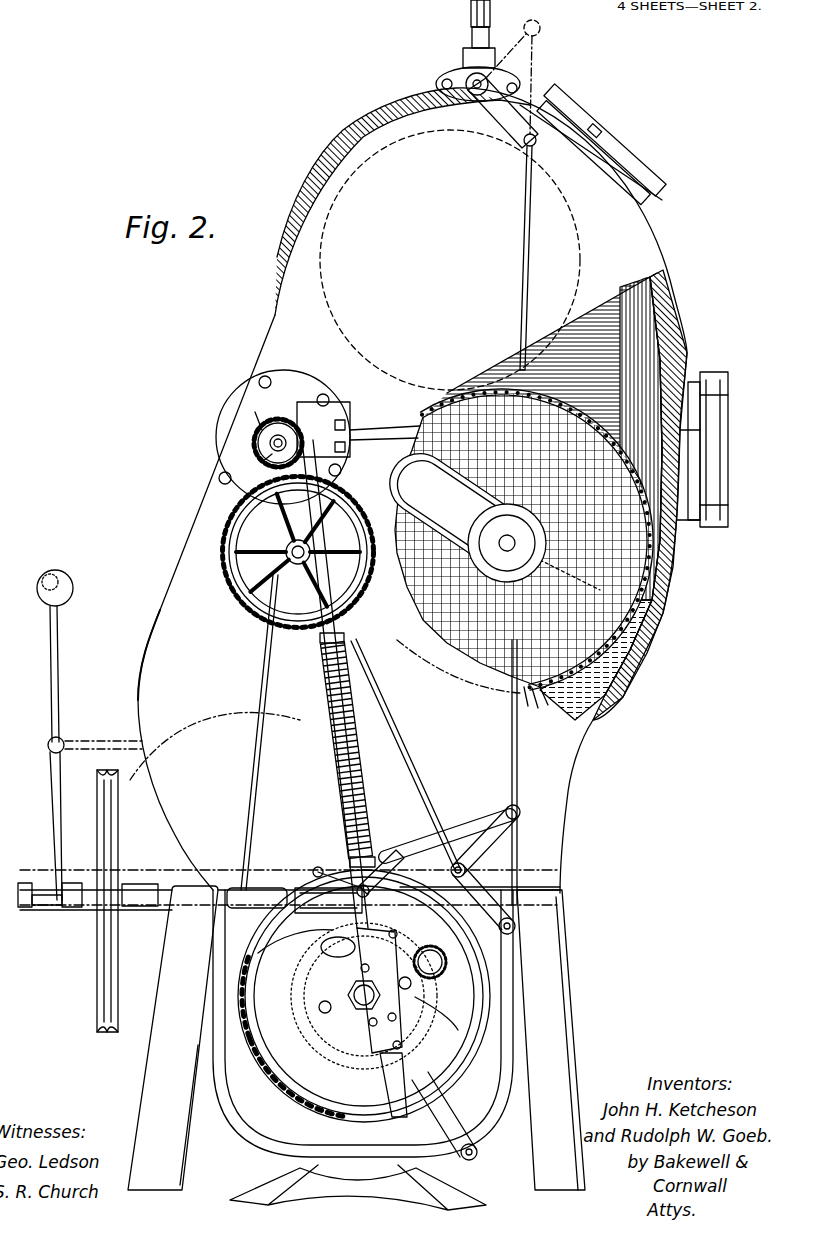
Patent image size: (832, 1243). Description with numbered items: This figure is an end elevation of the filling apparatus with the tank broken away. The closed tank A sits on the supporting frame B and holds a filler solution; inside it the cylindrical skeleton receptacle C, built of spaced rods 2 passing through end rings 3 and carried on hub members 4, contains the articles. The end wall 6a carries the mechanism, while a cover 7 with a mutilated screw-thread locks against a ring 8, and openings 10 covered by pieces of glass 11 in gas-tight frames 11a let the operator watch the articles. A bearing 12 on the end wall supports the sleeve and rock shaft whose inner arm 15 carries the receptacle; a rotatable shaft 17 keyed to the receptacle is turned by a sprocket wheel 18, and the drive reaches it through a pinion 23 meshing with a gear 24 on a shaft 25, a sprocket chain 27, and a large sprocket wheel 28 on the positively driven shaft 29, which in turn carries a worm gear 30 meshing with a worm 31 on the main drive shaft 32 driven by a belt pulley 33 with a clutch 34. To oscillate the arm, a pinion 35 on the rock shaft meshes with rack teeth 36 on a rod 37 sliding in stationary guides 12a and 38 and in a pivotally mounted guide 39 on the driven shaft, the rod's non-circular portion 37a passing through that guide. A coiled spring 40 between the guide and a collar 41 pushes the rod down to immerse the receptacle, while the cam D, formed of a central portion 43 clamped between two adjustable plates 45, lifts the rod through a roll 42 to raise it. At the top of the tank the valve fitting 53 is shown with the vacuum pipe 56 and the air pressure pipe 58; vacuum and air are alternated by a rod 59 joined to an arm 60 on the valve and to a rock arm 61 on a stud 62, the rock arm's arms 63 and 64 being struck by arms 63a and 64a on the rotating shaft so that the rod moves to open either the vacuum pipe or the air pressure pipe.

The closed tank A is at (408, 490).
The supporting frame B is at (575, 1016).
The receptacle C is at (632, 642).
The cam D is at (236, 1011).
The rods 2 is at (538, 708).
The rings 3 is at (452, 396).
The hub member 4 is at (570, 568).
The end wall 6a is at (188, 598).
The cover 7 is at (540, 362).
The ring 8 is at (640, 330).
The openings 10 is at (684, 546).
The pieces of glass 11 is at (716, 452).
The frames 11a is at (610, 150).
The bearing 12 is at (256, 412).
The stationary guide 12a is at (350, 440).
The arm 15 is at (453, 506).
The rotatable shaft 17 is at (498, 541).
The sprocket wheel 18 is at (494, 500).
The pinion 23 is at (254, 441).
The gear 24 is at (253, 616).
The shaft 25 is at (290, 557).
The sprocket chain 27 is at (258, 726).
The large sprocket wheel 28 is at (490, 960).
The positively driven shaft 29 is at (342, 988).
The worm gear 30 is at (439, 962).
The worm 31 is at (358, 980).
The main drive shaft 32 is at (234, 906).
The pulley 33 is at (98, 988).
The clutch 34 is at (60, 915).
The pinion 35 is at (262, 463).
The rack teeth 36 is at (300, 406).
The rod 37 is at (320, 512).
The non-circular portion 37a is at (380, 1101).
The stationary guide 38 is at (320, 642).
The pivotally mounted guide 39 is at (376, 1022).
The coiled spring 40 is at (334, 766).
The collar 41 is at (368, 872).
The roll 42 is at (372, 882).
The central portion 43 is at (330, 905).
The plates 45 is at (364, 996).
The bracket 53 is at (466, 58).
The vacuum pipe 56 is at (472, 38).
The air pressure pipe 58 is at (478, 10).
The rod 59 is at (522, 253).
The arm 60 is at (510, 124).
The rock arm 61 is at (508, 880).
The stud 62 is at (466, 873).
The arm 63 is at (405, 852).
The arm 63a is at (318, 868).
The arm 64 is at (500, 818).
The arm 64a is at (435, 1125).